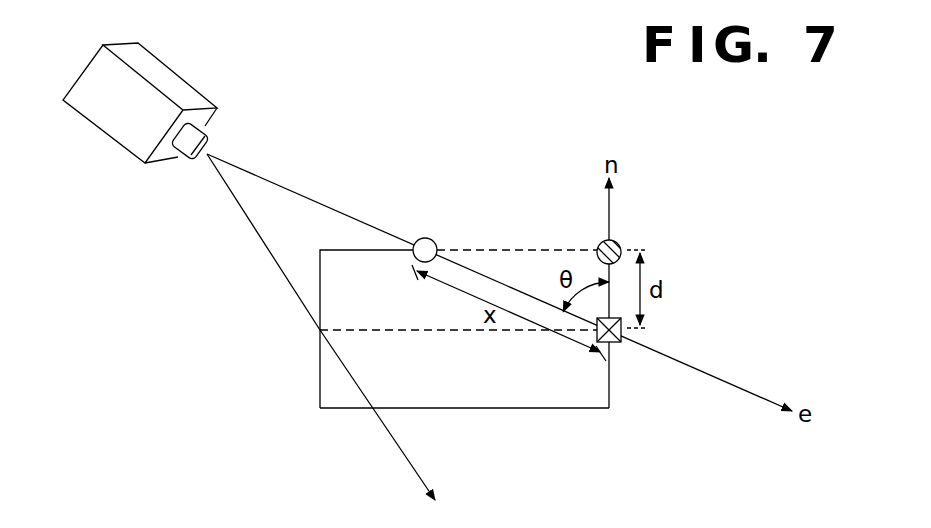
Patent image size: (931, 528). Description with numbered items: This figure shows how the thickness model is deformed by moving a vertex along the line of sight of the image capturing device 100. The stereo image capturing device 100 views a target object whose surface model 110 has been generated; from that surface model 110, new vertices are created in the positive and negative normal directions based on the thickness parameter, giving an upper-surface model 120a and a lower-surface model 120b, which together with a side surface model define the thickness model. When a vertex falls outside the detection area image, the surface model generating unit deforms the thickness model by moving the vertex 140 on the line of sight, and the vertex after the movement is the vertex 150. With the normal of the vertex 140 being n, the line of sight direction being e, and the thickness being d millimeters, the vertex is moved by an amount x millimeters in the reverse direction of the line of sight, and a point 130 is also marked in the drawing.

The image capturing device 100 is at (182, 77).
The surface model 110 is at (363, 330).
The upper-surface model 120a is at (352, 250).
The lower-surface model 120b is at (460, 410).
The target point on object 130 is at (622, 332).
The vertex 140 is at (620, 240).
The vertex after the movement 150 is at (429, 237).